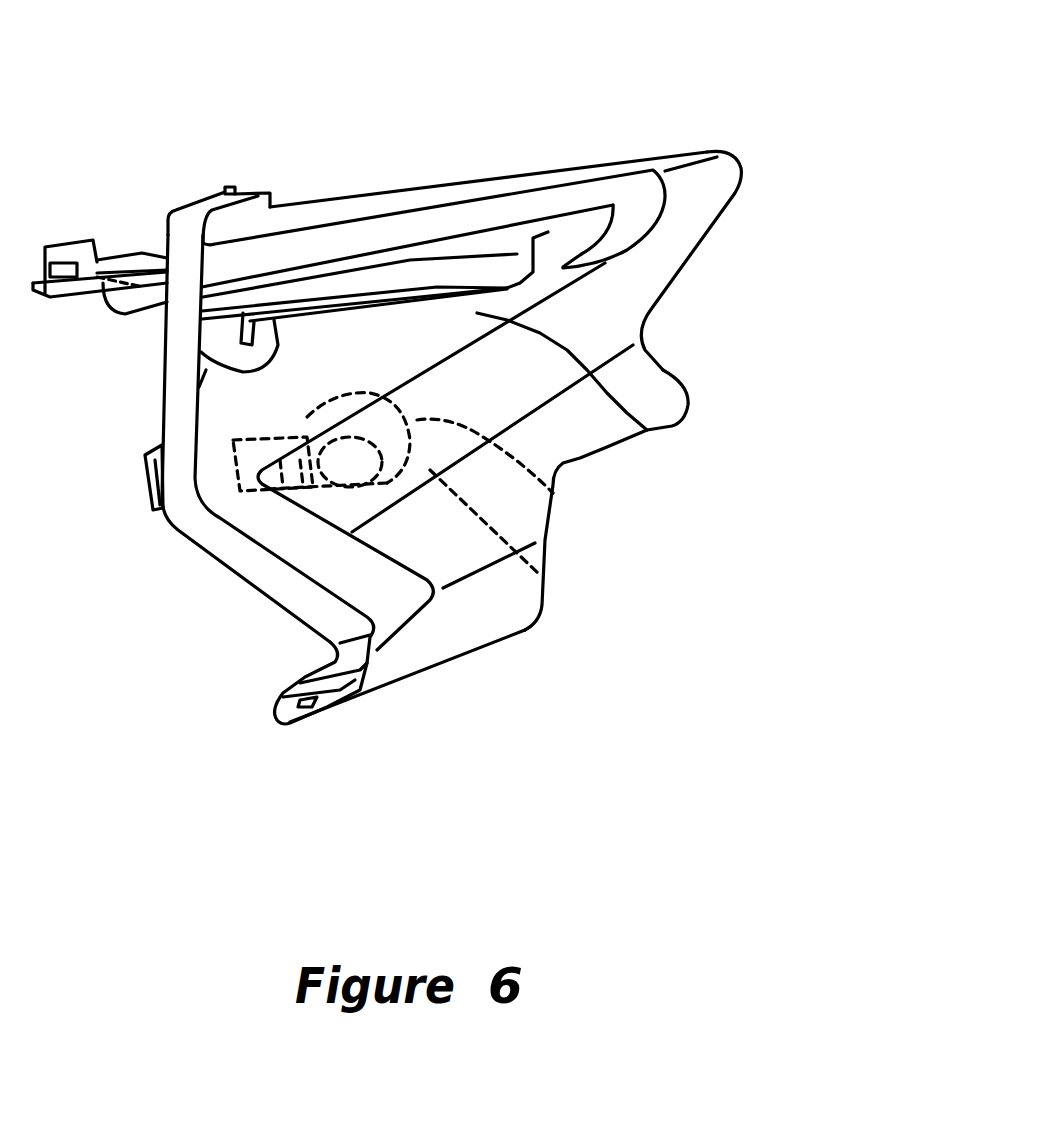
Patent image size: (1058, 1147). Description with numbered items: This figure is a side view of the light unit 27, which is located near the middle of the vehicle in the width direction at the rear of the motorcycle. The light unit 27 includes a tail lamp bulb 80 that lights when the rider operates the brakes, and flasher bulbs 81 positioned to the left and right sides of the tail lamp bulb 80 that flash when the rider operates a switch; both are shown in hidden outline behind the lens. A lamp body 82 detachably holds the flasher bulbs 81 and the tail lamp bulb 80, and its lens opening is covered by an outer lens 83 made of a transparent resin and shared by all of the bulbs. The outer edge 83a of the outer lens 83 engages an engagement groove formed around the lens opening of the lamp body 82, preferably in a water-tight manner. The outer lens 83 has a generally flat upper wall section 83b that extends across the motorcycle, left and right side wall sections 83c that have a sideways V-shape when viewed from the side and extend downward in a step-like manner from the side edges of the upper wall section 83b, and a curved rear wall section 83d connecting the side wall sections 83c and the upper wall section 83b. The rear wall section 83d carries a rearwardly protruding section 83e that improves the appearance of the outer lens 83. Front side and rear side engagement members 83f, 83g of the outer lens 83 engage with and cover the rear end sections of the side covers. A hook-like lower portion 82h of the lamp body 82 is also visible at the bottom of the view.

The light unit 27 is at (733, 99).
The tail lamp bulb 80 is at (553, 493).
The flasher bulb 81 is at (547, 587).
The lamp body 82 is at (190, 196).
The hook portion 82h is at (323, 708).
The outer lens 83 is at (640, 151).
The outer edge 83a is at (200, 398).
The upper wall section 83b is at (473, 183).
The side wall section 83c is at (647, 430).
The rear wall section 83d is at (687, 274).
The rearwardly protruding section 83e is at (675, 375).
The front side engagement member 83f is at (260, 373).
The rear side engagement member 83g is at (627, 252).